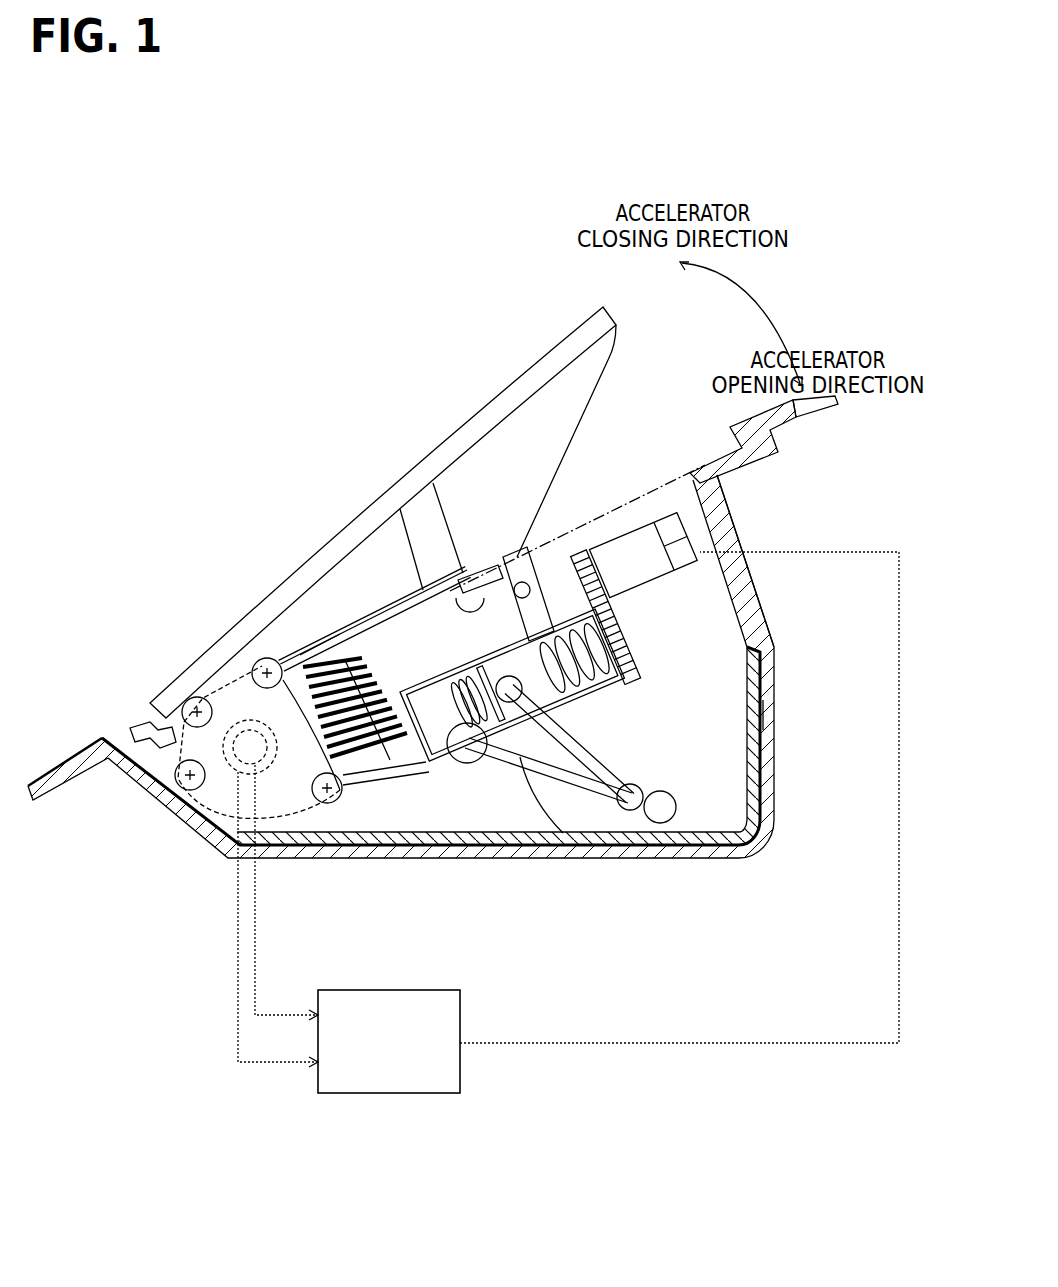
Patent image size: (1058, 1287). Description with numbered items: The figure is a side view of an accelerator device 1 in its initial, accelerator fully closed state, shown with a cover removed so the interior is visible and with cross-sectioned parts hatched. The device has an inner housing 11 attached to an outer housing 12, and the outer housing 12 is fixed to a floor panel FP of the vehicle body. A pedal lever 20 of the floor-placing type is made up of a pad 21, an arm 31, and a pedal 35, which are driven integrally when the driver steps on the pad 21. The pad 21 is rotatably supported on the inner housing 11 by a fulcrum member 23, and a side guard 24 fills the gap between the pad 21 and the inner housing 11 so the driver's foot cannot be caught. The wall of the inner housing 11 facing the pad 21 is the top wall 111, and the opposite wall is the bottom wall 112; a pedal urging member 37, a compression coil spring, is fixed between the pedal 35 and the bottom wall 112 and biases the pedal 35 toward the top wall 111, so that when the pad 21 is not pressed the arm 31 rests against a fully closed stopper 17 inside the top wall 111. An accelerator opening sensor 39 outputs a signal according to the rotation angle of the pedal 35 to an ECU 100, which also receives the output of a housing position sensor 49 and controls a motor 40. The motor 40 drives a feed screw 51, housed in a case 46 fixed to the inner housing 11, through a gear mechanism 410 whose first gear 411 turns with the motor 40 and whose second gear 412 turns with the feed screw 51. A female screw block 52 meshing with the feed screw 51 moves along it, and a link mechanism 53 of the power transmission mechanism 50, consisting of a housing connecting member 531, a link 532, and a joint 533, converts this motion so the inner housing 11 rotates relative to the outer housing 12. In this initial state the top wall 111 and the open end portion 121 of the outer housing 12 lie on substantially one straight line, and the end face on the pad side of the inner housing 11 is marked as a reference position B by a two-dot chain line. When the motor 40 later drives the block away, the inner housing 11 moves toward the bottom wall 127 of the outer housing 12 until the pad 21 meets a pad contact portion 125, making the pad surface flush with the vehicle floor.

The accelerator device 1 is at (163, 947).
The inner housing 11 is at (397, 772).
The outer housing 12 is at (762, 662).
The fully closed stopper 17 is at (483, 567).
The pedal lever 20 is at (400, 512).
The pad 21 is at (467, 433).
The fulcrum member 23 is at (127, 775).
The side guard 24 is at (593, 368).
The arm 31 is at (397, 530).
The pedal 35 is at (300, 655).
The pedal urging member 37 is at (368, 762).
The accelerator opening sensor 39 is at (263, 830).
The motor 40 is at (720, 500).
The case 46 is at (458, 735).
The housing position sensor 49 is at (225, 795).
The power transmission mechanism 50 is at (660, 694).
The feed screw 51 is at (745, 790).
The female screw block 52 is at (525, 700).
The link mechanism 53 is at (683, 818).
The ECU 100 is at (331, 1094).
The top wall 111 is at (345, 620).
The bottom wall 112 is at (424, 782).
The open end portion 121 is at (130, 740).
The pad contact portion 125 is at (690, 476).
The bottom wall 127 is at (610, 845).
The gear mechanism 410 is at (650, 642).
The first gear 411 is at (660, 532).
The second gear 412 is at (627, 610).
The housing connecting member 531 is at (628, 812).
The link 532 is at (560, 775).
The joint 533 is at (650, 835).
The reference position B is at (622, 507).
The floor panel FP is at (763, 713).